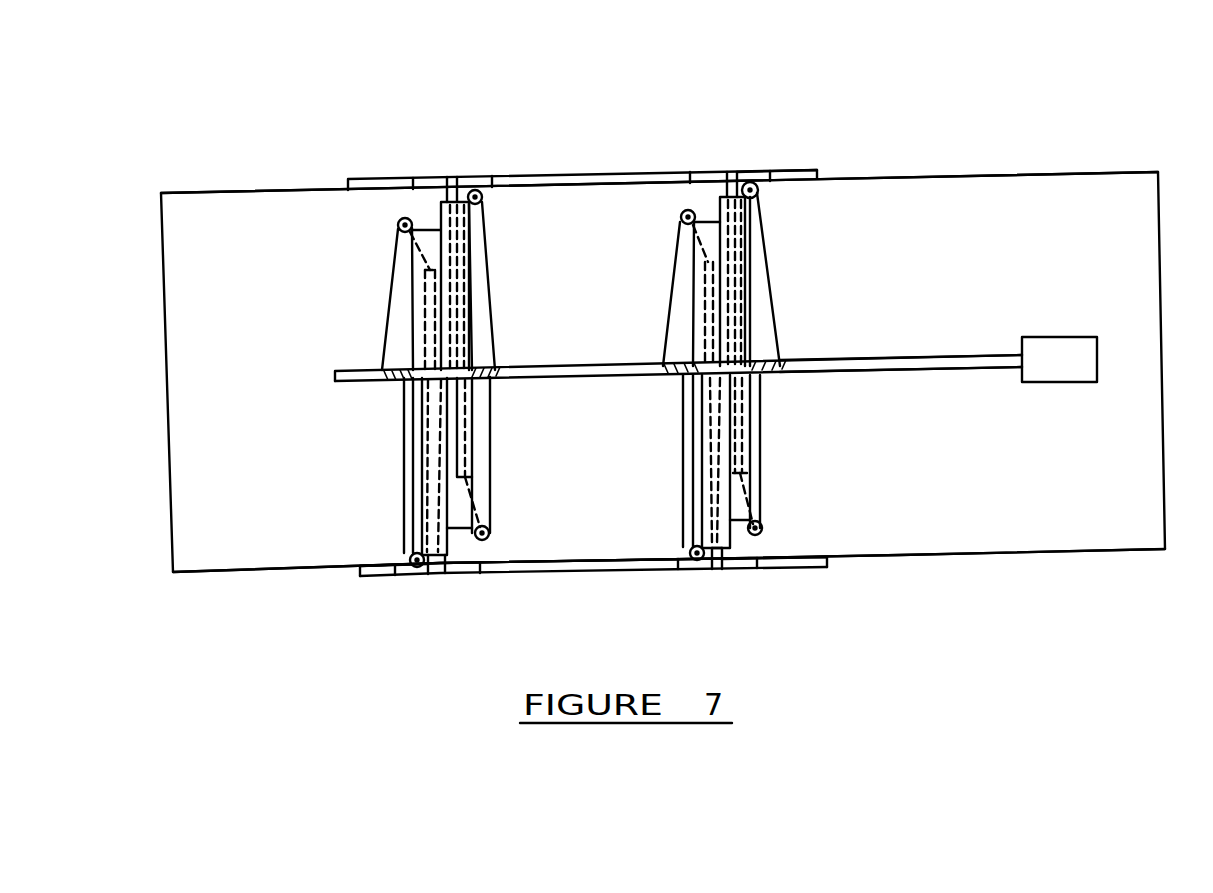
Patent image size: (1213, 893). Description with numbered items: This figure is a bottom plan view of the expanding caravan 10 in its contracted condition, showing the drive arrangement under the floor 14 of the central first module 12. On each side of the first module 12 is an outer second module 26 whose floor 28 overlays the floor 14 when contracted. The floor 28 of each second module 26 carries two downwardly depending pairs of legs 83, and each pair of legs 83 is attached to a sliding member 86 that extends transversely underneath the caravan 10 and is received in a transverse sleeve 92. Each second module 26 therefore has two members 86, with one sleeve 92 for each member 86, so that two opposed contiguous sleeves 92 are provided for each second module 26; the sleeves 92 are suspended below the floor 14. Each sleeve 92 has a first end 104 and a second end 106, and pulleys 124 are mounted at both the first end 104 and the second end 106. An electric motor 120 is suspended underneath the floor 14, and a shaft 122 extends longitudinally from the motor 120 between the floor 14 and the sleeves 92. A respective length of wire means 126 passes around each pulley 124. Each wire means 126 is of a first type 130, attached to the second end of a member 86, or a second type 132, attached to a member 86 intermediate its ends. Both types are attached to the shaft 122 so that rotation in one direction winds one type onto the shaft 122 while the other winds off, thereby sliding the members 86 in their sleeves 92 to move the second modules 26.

The expanding caravan 10 is at (208, 104).
The central first module 12 is at (232, 576).
The floor 14 is at (1100, 177).
The outer second module 26 is at (582, 174).
The floor 28 is at (372, 181).
The legs 83 is at (752, 173).
The sliding member 86 is at (428, 308).
The transverse sleeve 92 is at (472, 274).
The first end 104 is at (737, 560).
The second end 106 is at (758, 193).
The electric motor 120 is at (1086, 377).
The shaft 122 is at (906, 357).
The pulleys 124 is at (689, 217).
The wire means 126 is at (497, 318).
The first type wire means 130 is at (388, 350).
The second type wire means 132 is at (488, 236).